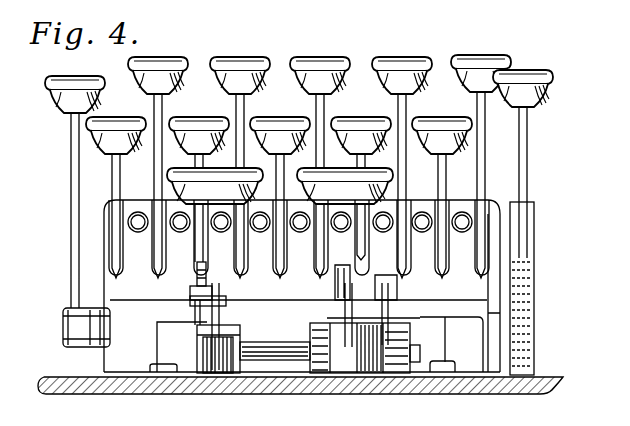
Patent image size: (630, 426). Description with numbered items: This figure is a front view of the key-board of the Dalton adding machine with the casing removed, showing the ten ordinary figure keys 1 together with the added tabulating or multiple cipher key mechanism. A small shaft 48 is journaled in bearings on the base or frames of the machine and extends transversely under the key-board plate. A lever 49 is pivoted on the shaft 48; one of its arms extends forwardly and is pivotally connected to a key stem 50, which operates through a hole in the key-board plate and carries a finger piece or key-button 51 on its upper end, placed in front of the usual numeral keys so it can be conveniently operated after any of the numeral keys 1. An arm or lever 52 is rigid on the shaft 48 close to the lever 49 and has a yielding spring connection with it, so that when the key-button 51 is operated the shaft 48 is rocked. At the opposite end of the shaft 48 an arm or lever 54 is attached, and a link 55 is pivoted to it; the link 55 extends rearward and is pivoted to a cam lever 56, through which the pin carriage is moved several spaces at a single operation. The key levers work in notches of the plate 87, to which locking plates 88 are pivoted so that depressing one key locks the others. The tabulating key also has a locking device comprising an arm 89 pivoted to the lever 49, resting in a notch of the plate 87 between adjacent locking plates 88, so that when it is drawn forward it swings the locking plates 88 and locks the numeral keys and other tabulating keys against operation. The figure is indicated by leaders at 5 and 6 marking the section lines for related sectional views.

The figure keys 1 is at (309, 65).
The key 5 is at (199, 115).
The base 6 is at (202, 395).
The shaft 48 is at (276, 352).
The lever 49 is at (210, 321).
The key stem 50 is at (196, 259).
The key-button 51 is at (212, 180).
The arm or lever 52 is at (233, 300).
The arm or lever 54 is at (445, 347).
The link 55 is at (397, 284).
The cam lever 56 is at (393, 177).
The plate 87 is at (493, 238).
The locking plates 88 is at (442, 296).
The arms 89 is at (212, 281).